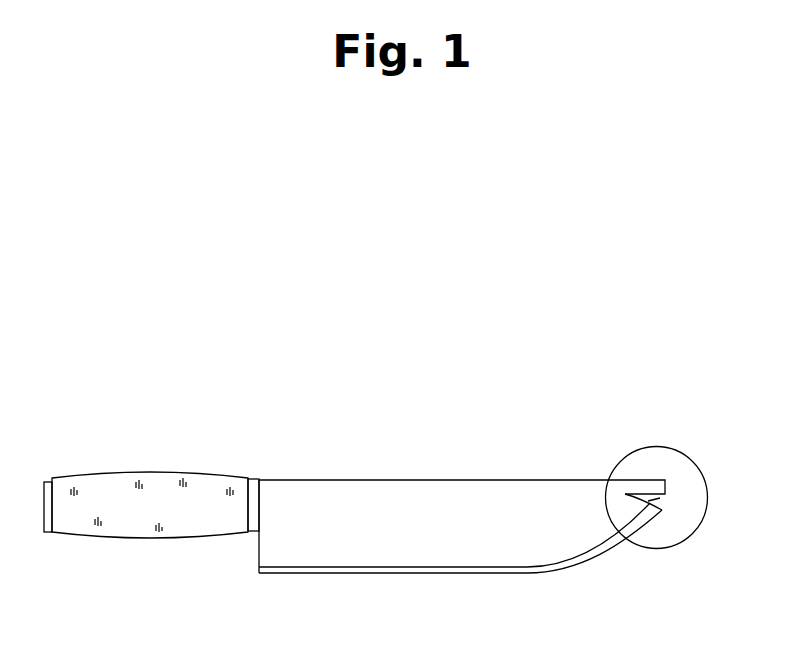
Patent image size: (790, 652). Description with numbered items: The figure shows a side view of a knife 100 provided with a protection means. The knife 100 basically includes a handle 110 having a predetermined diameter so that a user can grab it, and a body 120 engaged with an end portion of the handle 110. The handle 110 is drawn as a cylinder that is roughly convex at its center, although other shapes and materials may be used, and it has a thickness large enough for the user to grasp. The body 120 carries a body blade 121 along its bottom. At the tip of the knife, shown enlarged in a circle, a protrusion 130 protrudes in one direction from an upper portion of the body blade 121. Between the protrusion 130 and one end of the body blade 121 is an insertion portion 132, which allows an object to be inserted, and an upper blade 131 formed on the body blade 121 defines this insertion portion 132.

The knife 100 is at (405, 489).
The handle 110 is at (185, 527).
The body 120 is at (513, 533).
The body blade 121 is at (482, 570).
The protrusion 130 is at (686, 516).
The upper blade 131 is at (657, 508).
The insertion portion 132 is at (657, 500).